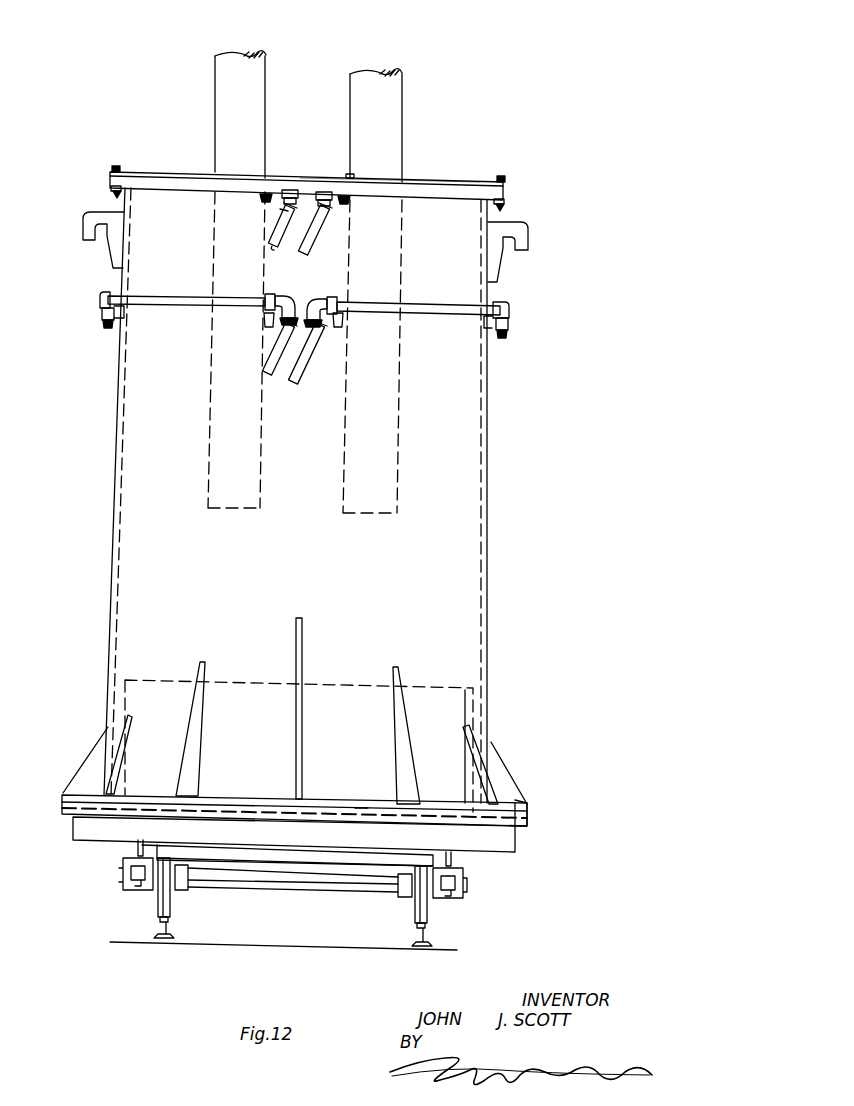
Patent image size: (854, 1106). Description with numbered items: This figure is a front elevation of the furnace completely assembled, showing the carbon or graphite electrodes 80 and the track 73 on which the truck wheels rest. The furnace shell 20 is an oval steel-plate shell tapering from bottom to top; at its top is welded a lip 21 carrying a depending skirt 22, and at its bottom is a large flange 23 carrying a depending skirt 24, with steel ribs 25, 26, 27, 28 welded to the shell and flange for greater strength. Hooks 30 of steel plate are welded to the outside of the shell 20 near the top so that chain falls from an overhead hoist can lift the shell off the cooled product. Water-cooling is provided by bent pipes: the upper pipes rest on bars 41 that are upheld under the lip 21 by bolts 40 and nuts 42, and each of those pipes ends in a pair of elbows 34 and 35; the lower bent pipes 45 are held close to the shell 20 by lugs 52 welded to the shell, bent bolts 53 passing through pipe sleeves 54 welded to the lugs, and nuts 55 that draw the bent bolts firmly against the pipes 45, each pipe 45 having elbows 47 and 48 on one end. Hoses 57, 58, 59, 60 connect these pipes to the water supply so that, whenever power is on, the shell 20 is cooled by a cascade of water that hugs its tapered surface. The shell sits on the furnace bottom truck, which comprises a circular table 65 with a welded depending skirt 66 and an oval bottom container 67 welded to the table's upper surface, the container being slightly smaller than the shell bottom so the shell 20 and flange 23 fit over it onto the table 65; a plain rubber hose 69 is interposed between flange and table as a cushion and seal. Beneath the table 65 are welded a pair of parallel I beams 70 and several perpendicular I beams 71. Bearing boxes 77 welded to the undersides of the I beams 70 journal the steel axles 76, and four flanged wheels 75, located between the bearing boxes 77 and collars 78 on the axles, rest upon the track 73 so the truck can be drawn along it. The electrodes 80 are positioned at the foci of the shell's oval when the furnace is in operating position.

The furnace shell 20 is at (488, 556).
The lip 21 is at (462, 182).
The depending skirt 22 is at (443, 192).
The flange 23 is at (257, 796).
The depending skirt 24 is at (530, 816).
The steel rib 25 is at (303, 660).
The steel rib 26 is at (198, 750).
The steel rib 27 is at (126, 752).
The steel rib 28 is at (94, 762).
The hooks 30 is at (85, 228).
The elbow 34 is at (322, 194).
The elbow 35 is at (275, 203).
The bolts 40 is at (114, 170).
The bars 41 is at (111, 184).
The nuts 42 is at (113, 194).
The bent pipes 45 is at (188, 302).
The elbow 47 is at (332, 306).
The elbow 48 is at (278, 340).
The lugs 52 is at (117, 314).
The bent bolts 53 is at (103, 296).
The pipe sleeves 54 is at (103, 310).
The nuts 55 is at (104, 324).
The hose 57 is at (278, 233).
The hose 58 is at (312, 240).
The hose 59 is at (265, 372).
The hose 60 is at (296, 386).
The circular table 65 is at (360, 808).
The depending skirt 66 is at (76, 830).
The oval bottom container 67 is at (470, 690).
The hose 69 is at (72, 806).
The I beams 70 is at (136, 848).
The I beams 71 is at (318, 858).
The track 73 is at (158, 930).
The flanged wheels 75 is at (170, 906).
The axles 76 is at (330, 882).
The bearing boxes 77 is at (132, 890).
The collars 78 is at (192, 886).
The electrodes 80 is at (255, 100).